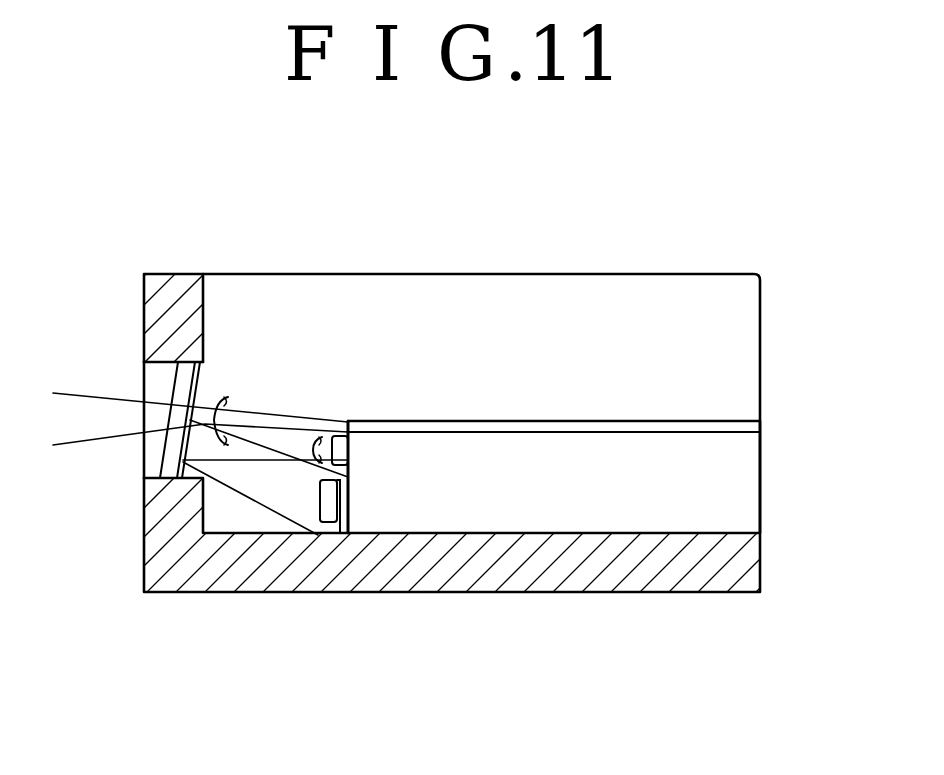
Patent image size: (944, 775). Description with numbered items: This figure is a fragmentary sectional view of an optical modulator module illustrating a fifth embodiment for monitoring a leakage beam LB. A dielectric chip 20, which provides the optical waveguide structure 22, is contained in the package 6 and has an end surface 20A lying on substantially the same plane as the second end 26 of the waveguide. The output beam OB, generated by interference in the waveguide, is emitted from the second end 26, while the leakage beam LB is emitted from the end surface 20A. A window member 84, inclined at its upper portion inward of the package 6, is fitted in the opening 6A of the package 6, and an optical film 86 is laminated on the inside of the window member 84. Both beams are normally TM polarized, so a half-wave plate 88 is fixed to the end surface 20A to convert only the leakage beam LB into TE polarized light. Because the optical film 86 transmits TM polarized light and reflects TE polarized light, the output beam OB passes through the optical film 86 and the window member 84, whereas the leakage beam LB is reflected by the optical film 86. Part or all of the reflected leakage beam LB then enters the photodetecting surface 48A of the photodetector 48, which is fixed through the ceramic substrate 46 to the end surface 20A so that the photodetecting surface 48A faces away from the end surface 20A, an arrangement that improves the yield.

The package 6 is at (487, 596).
The opening 6A is at (150, 382).
The dielectric chip 20 is at (735, 490).
The end surface 20A is at (350, 463).
The optical waveguide structure 22 is at (596, 428).
The second end 26 is at (320, 438).
The ceramic substrate 46 is at (350, 517).
The photodetector 48 is at (328, 513).
The photodetecting surface 48A is at (322, 502).
The window member 84 is at (150, 325).
The optical film 86 is at (207, 363).
The half-wave plate 88 is at (350, 442).
The leakage beam LB is at (297, 435).
The output beam OB is at (222, 393).